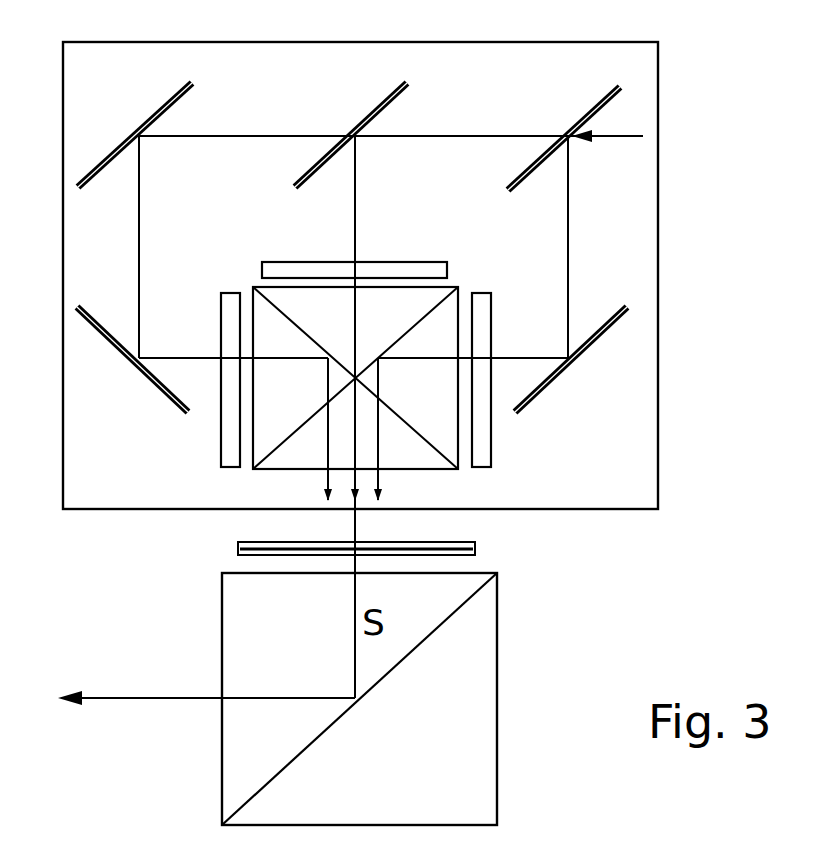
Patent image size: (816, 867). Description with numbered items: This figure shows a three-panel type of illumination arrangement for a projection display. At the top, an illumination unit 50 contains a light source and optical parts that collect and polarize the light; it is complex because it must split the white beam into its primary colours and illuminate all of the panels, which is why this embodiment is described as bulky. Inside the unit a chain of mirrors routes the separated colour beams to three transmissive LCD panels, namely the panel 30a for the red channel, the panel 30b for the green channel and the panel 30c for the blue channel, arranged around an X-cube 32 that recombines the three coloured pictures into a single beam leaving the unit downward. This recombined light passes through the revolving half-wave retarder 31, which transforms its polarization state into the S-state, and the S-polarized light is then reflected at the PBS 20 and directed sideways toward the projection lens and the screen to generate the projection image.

The illumination unit 50 is at (306, 95).
The red channel panel 30a is at (220, 413).
The green channel panel 30b is at (293, 270).
The blue channel panel 30c is at (485, 440).
The X-cube 32 is at (412, 327).
The revolving half-wave retarder 31 is at (478, 545).
The PBS 20 is at (464, 787).